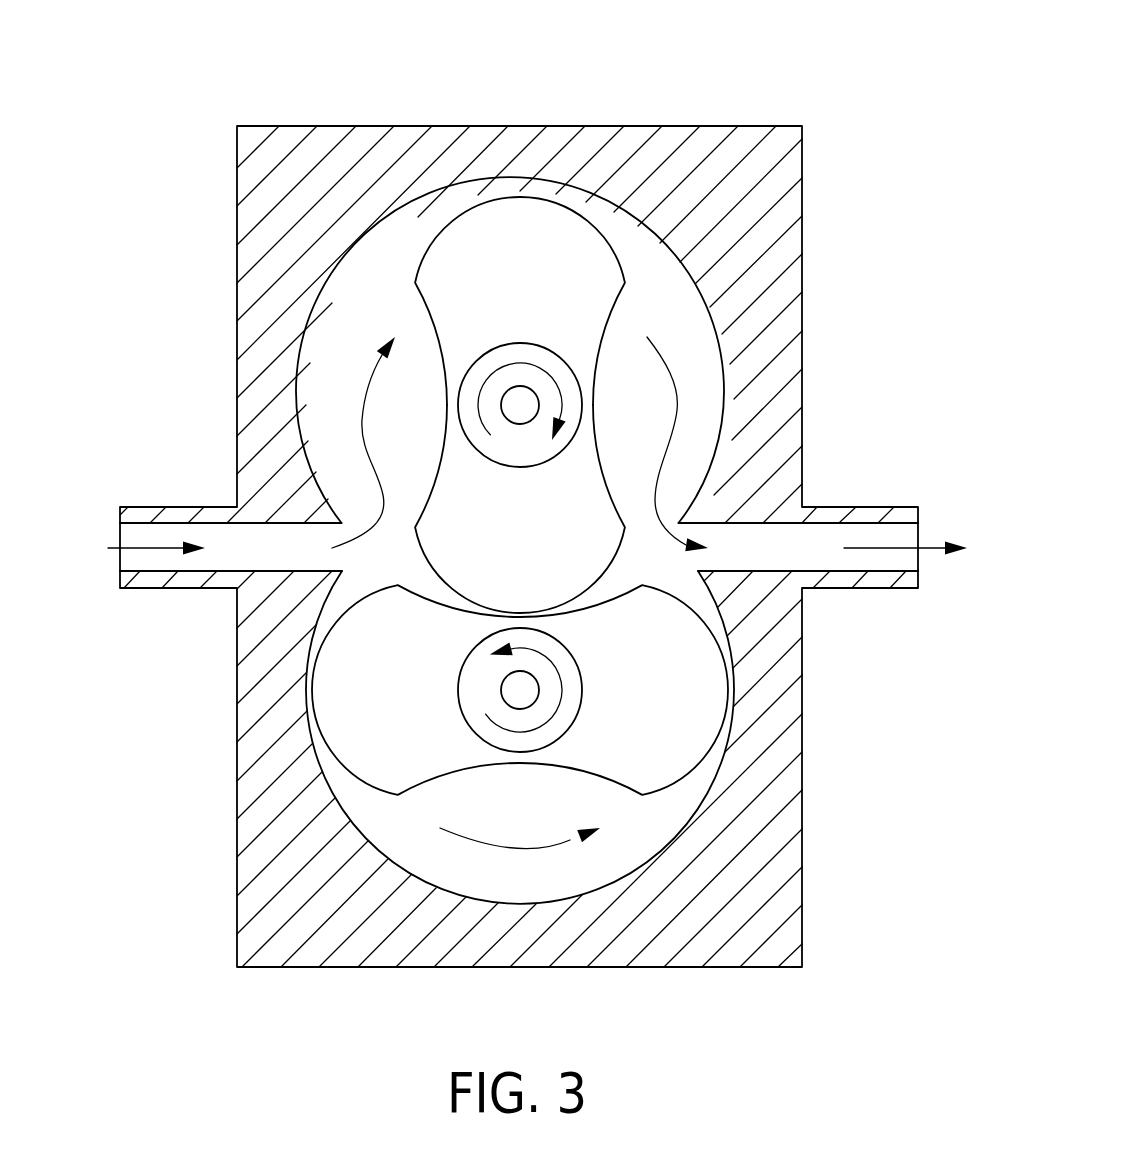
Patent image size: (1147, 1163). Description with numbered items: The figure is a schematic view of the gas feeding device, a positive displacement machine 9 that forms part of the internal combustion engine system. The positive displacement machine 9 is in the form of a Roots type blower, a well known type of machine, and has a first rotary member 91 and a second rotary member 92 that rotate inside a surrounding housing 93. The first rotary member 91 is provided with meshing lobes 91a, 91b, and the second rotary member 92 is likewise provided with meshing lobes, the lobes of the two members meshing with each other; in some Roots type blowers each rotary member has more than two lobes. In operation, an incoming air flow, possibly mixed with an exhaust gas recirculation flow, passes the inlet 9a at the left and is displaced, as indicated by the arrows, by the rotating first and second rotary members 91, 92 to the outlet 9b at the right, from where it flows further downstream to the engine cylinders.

The positive displacement machine 9 is at (808, 49).
The housing 93 is at (385, 126).
The inlet 9a is at (108, 545).
The outlet 9b is at (934, 527).
The first rotary member 91 is at (516, 406).
The lobe 91a is at (520, 231).
The lobe 91b is at (386, 509).
The second rotary member 92 is at (516, 691).